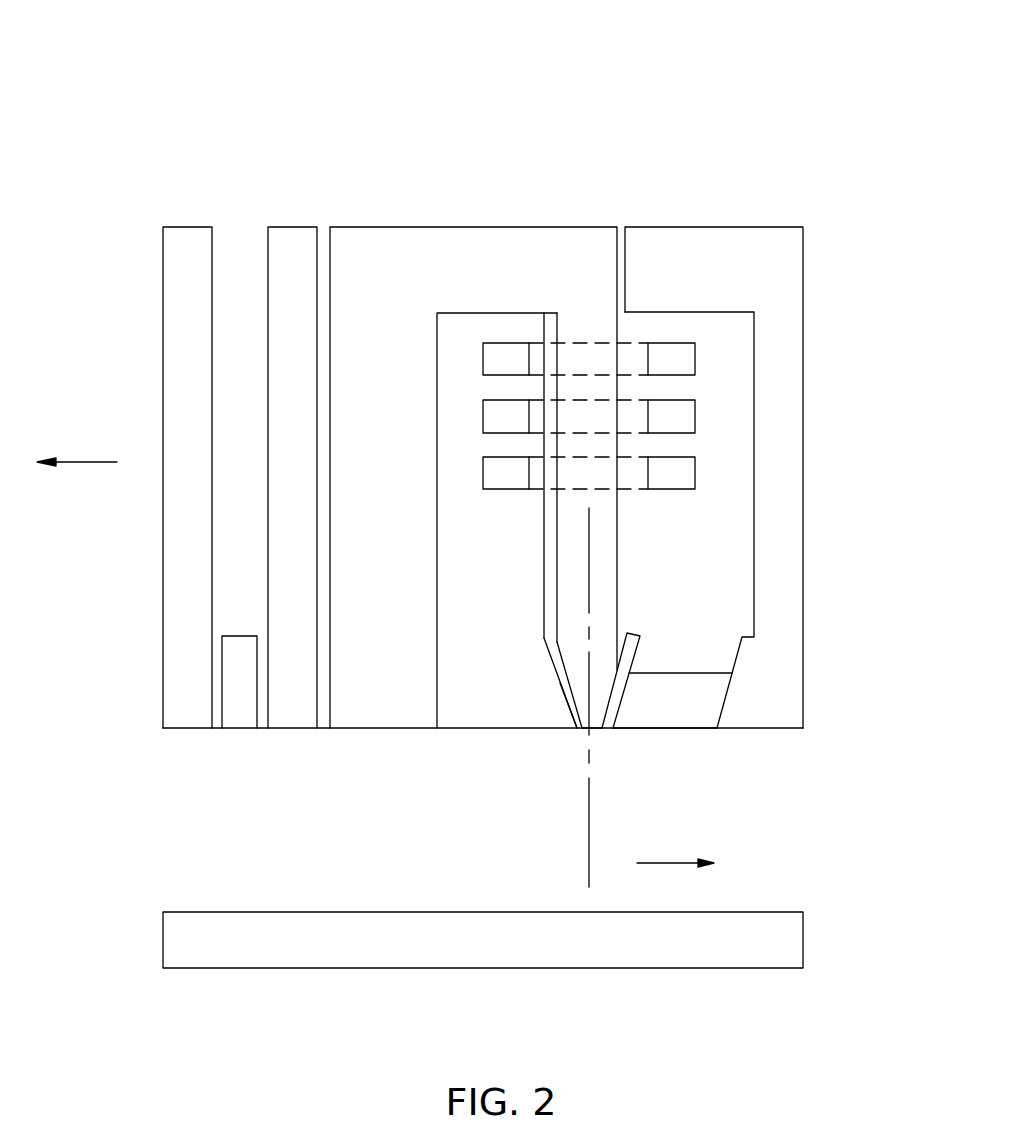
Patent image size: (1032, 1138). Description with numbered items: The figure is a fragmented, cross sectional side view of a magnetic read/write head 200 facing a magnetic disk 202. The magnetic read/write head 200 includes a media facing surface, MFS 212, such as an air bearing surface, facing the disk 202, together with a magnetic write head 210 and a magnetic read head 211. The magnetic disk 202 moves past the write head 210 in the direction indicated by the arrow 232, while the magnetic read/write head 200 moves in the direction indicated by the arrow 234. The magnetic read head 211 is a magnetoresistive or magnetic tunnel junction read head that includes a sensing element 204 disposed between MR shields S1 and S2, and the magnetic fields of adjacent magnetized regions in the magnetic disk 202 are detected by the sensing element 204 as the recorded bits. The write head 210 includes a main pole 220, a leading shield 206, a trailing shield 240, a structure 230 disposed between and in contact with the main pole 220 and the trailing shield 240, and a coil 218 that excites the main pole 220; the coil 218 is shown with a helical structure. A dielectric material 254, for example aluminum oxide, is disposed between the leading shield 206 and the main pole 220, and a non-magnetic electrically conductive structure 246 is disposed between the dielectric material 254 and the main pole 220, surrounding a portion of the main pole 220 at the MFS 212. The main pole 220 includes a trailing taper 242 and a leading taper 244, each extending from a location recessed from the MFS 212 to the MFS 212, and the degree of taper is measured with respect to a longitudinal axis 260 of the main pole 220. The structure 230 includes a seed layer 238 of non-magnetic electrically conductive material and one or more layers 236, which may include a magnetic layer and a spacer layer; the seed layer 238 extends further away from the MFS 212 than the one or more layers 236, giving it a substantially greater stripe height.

The magnetic read/write head 200 is at (800, 55).
The magnetic disk 202 is at (803, 937).
The MR sensing element 204 is at (238, 730).
The leading shield 206 is at (350, 730).
The magnetic write head 210 is at (330, 172).
The magnetic read head 211 is at (163, 172).
The MFS 212 is at (770, 732).
The coil 218 is at (502, 490).
The main pole 220 is at (564, 598).
The structure 230 is at (664, 735).
The arrow 232 is at (667, 862).
The arrow 234 is at (90, 462).
The one or more layers 236 is at (676, 690).
The seed layer 238 is at (632, 642).
The trailing shield 240 is at (805, 667).
The trailing taper 242 is at (608, 697).
The leading taper 244 is at (562, 660).
The non-magnetic electrically conductive structure 246 is at (565, 688).
The dielectric material 254 is at (480, 705).
The longitudinal axis 260 is at (587, 825).
The MR shield S1 is at (188, 730).
The MR shield S2 is at (285, 730).